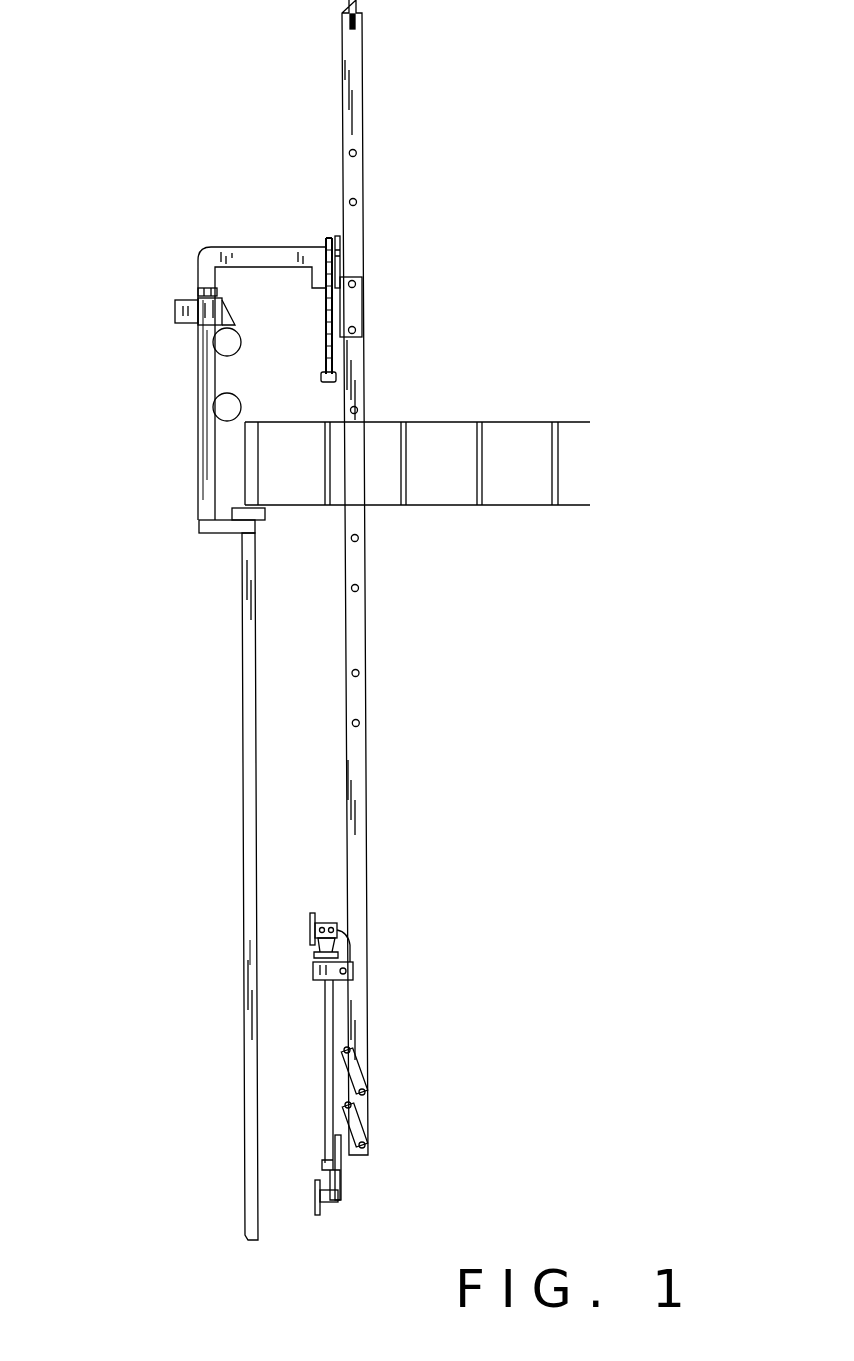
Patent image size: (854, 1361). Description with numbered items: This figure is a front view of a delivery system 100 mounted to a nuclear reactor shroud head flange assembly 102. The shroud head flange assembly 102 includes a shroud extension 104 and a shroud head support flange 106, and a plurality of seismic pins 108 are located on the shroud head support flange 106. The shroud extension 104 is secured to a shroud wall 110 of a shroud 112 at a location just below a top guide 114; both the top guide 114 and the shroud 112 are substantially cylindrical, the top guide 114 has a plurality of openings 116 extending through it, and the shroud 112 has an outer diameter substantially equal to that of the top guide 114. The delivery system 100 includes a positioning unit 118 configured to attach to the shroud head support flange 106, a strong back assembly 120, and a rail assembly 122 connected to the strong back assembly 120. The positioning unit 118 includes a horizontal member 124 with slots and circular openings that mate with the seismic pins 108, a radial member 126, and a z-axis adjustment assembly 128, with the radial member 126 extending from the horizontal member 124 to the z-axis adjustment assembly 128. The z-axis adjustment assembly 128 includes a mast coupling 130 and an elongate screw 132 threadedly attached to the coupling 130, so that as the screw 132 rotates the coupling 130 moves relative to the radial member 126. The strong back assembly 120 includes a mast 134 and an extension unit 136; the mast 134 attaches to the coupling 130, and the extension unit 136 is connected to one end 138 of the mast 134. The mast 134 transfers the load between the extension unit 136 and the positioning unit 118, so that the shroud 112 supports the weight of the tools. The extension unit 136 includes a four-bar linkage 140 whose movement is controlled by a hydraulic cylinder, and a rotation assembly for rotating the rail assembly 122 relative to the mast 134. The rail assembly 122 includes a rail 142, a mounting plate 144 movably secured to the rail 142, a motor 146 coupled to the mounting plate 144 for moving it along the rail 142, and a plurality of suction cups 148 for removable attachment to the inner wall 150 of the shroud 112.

The delivery system 100 is at (428, 148).
The shroud head flange assembly 102 is at (162, 412).
The shroud extension 104 is at (200, 462).
The shroud head support flange 106 is at (197, 326).
The seismic pins 108 is at (201, 290).
The shroud wall 110 is at (240, 558).
The shroud 112 is at (208, 705).
The top guide 114 is at (535, 420).
The openings 116 is at (440, 408).
The positioning unit 118 is at (252, 238).
The strong back assembly 120 is at (370, 700).
The rail assembly 122 is at (318, 1098).
The horizontal member 124 is at (218, 292).
The radial member 126 is at (231, 256).
The z-axis adjustment assembly 128 is at (321, 220).
The mast coupling 130 is at (355, 311).
The elongate screw 132 is at (333, 345).
The mast 134 is at (355, 631).
The extension unit 136 is at (372, 1055).
The end of mast 138 is at (365, 1130).
The four-bar linkage 140 is at (355, 1112).
The rail 142 is at (325, 1002).
The mounting plate 144 is at (355, 968).
The motor 146 is at (345, 935).
The suction cups 148 is at (310, 920).
The inner wall 150 is at (258, 952).